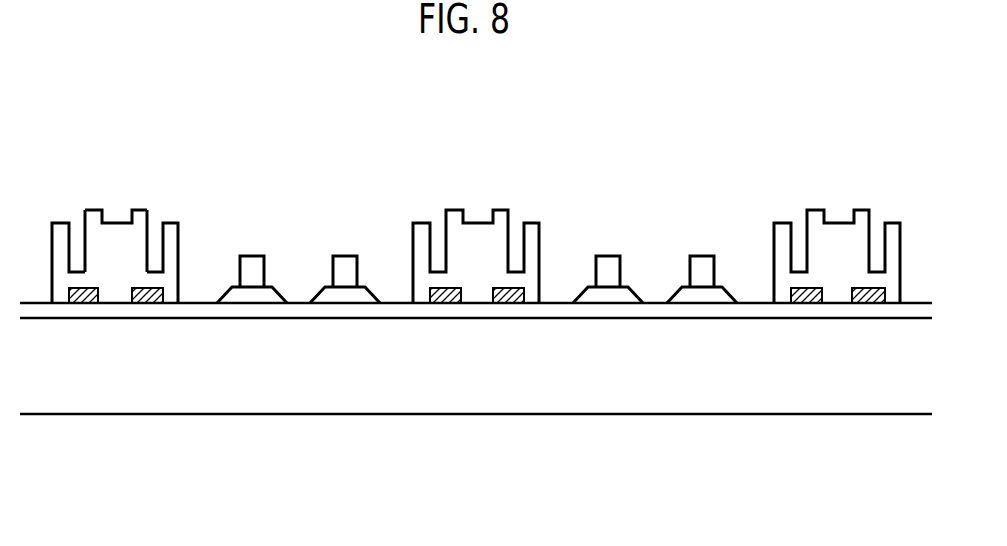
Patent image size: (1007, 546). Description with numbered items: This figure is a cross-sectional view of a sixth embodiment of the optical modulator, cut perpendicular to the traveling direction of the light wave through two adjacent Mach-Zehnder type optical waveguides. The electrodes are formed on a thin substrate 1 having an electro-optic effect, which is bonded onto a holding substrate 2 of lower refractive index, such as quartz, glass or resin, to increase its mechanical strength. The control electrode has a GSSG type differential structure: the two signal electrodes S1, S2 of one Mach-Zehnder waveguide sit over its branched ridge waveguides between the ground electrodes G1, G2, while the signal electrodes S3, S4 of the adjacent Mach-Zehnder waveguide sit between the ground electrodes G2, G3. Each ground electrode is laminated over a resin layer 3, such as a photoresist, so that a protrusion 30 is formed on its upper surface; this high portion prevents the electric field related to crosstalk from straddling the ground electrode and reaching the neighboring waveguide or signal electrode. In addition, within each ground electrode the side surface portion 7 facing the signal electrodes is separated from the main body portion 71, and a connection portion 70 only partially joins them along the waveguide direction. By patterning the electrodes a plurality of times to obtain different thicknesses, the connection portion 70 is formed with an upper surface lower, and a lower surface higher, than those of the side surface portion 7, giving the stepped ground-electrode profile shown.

The substrate 1 is at (195, 310).
The holding substrate 2 is at (432, 383).
The resin layer 3 is at (80, 295).
The side surface portion 7 is at (172, 223).
The connection portion 70 is at (155, 245).
The main body portion 71 is at (123, 263).
The protrusion 30 is at (807, 210).
The ground electrode G1 is at (278, 301).
The ground electrode G2 is at (486, 201).
The ground electrode G3 is at (837, 190).
The signal electrode S1 is at (252, 259).
The signal electrode S2 is at (345, 259).
The signal electrode S3 is at (608, 259).
The signal electrode S4 is at (702, 259).